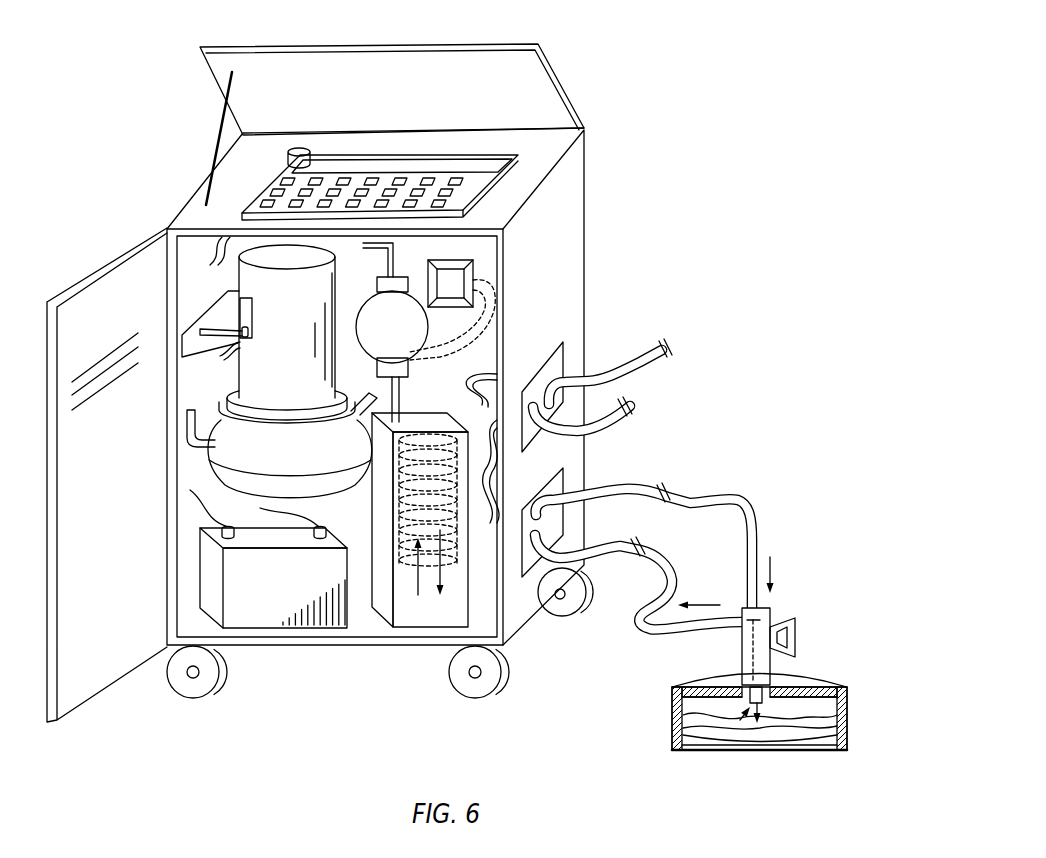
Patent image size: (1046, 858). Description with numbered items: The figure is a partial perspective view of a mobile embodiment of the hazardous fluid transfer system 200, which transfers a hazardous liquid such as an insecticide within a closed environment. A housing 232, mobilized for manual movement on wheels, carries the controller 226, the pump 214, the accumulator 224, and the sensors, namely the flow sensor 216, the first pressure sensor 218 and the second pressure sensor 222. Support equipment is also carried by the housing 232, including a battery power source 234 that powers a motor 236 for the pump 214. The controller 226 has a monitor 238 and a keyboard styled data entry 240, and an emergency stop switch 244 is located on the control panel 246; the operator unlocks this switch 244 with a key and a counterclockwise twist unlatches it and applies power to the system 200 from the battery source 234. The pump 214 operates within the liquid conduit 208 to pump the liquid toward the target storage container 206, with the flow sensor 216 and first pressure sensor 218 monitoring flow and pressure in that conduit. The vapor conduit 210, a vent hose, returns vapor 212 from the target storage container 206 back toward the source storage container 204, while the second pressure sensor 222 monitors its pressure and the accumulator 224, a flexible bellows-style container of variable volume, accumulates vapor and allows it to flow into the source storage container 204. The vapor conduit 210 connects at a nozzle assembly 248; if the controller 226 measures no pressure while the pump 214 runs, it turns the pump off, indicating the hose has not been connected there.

The hazardous fluid transfer system 200 is at (617, 112).
The source storage container 204 is at (640, 395).
The target storage container 206 is at (837, 670).
The liquid conduit 208 is at (635, 620).
The vapor conduit 210 is at (728, 493).
The vapor 212 is at (682, 699).
The pump 214 is at (240, 477).
The flow sensor 216 is at (408, 333).
The first pressure sensor 218 is at (470, 259).
The second pressure sensor 222 is at (452, 320).
The accumulator 224 is at (418, 613).
The controller 226 is at (530, 148).
The housing 232 is at (560, 283).
The battery power source 234 is at (277, 613).
The motor 236 is at (280, 353).
The monitor 238 is at (343, 167).
The keyboard styled data entry 240 is at (277, 182).
The emergency stop switch 244 is at (270, 157).
The control panel 246 is at (473, 183).
The nozzle assembly 248 is at (783, 604).